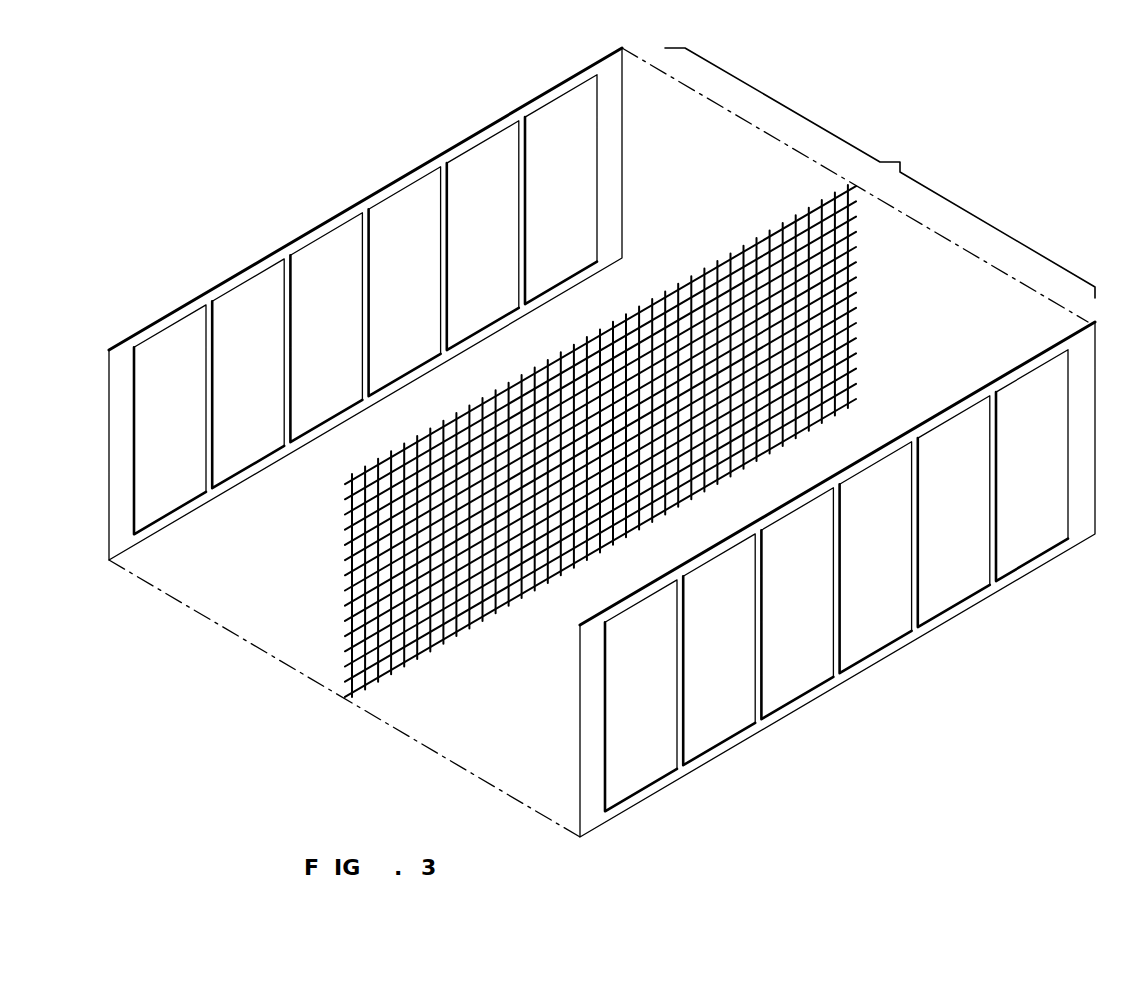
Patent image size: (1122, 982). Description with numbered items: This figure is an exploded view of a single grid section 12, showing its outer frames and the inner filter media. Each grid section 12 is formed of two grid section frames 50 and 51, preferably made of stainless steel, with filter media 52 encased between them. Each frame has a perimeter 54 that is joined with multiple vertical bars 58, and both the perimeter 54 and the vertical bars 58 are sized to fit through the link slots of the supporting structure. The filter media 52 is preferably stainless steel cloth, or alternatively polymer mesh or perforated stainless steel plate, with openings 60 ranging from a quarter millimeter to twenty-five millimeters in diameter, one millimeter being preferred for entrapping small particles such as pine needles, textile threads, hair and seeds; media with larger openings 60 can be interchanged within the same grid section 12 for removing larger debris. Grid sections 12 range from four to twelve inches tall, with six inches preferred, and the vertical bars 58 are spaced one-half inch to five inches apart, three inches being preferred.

The grid section 12 is at (602, 442).
The grid section frame 50 is at (293, 197).
The grid section frame 51 is at (822, 731).
The filter media 52 is at (596, 441).
The perimeter 54 is at (238, 272).
The vertical bar 58 is at (370, 275).
The opening 60 is at (377, 563).